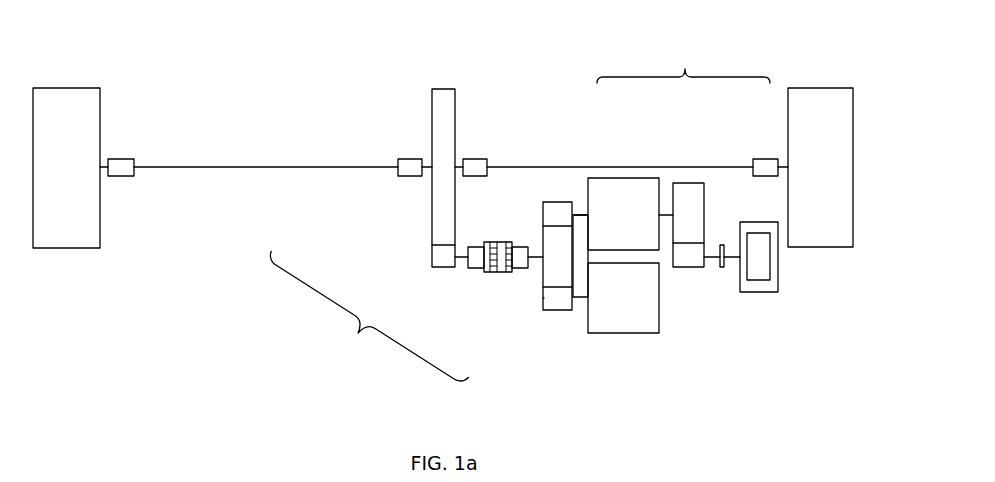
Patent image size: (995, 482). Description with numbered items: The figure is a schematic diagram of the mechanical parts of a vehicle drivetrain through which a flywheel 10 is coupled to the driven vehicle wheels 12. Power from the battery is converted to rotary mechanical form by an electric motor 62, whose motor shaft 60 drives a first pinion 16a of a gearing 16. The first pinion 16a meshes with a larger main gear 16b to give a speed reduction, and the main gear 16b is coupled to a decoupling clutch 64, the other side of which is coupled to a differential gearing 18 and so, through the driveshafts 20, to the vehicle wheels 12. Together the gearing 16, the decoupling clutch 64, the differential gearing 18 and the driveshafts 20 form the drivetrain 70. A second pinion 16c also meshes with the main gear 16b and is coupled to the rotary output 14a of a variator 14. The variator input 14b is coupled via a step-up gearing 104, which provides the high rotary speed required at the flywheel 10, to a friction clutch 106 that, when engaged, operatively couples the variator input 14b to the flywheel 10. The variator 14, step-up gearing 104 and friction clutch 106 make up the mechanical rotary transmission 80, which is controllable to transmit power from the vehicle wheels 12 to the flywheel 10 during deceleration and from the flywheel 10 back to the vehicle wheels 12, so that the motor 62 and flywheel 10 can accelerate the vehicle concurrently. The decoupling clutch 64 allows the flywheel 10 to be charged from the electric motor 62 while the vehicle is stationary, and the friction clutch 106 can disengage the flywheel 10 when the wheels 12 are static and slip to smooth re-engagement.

The flywheel 10 is at (760, 292).
The vehicle wheels 12 is at (805, 88).
The variator 14 is at (635, 178).
The rotary output of the variator 14a is at (580, 215).
The variator input 14b is at (668, 215).
The gearing 16 is at (512, 281).
The first pinion 16a is at (530, 297).
The main gear 16b is at (542, 243).
The second pinion 16c is at (543, 213).
The differential gearing 18 is at (433, 237).
The driveshafts 20 is at (330, 168).
The motor shaft 60 is at (585, 297).
The electric motor 62 is at (630, 333).
The decoupling clutch 64 is at (500, 270).
The drivetrain 70 is at (369, 316).
The mechanical rotary transmission 80 is at (683, 62).
The step-up gearing 104 is at (688, 183).
The friction clutch 106 is at (722, 245).